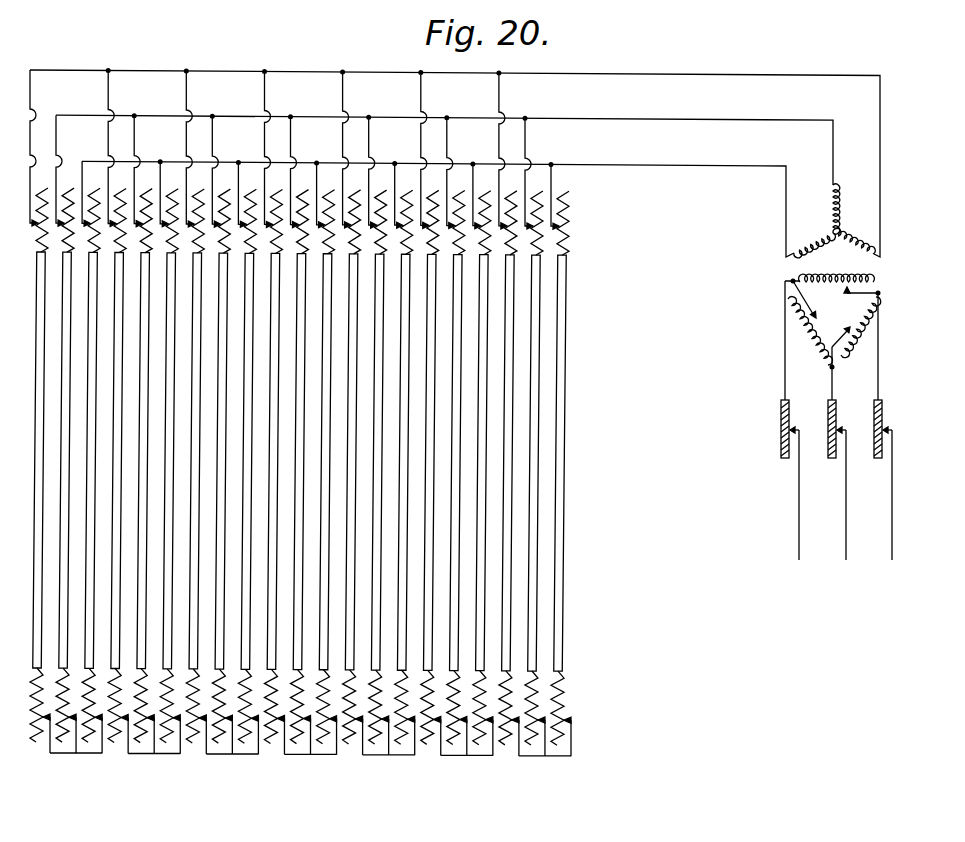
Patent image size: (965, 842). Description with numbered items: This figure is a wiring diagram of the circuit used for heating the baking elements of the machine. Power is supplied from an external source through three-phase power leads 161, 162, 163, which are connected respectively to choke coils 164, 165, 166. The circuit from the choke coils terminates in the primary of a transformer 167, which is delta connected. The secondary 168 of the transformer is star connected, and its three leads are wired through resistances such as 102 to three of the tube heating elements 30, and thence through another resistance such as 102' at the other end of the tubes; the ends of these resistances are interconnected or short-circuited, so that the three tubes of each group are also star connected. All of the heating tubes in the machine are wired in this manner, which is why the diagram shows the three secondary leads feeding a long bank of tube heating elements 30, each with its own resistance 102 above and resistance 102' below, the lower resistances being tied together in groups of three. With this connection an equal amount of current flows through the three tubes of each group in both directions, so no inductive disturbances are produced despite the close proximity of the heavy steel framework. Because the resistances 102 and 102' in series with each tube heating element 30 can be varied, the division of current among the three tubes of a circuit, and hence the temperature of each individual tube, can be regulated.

The resistance 102 is at (332, 221).
The tube heating element 30 is at (538, 297).
The resistance 102' is at (344, 712).
The secondary 168 is at (842, 228).
The transformer 167 is at (838, 278).
The choke coil 164 is at (781, 413).
The choke coil 165 is at (828, 418).
The choke coil 166 is at (884, 412).
The three-phase power lead 161 is at (799, 507).
The three-phase power lead 162 is at (846, 507).
The three-phase power lead 163 is at (892, 507).